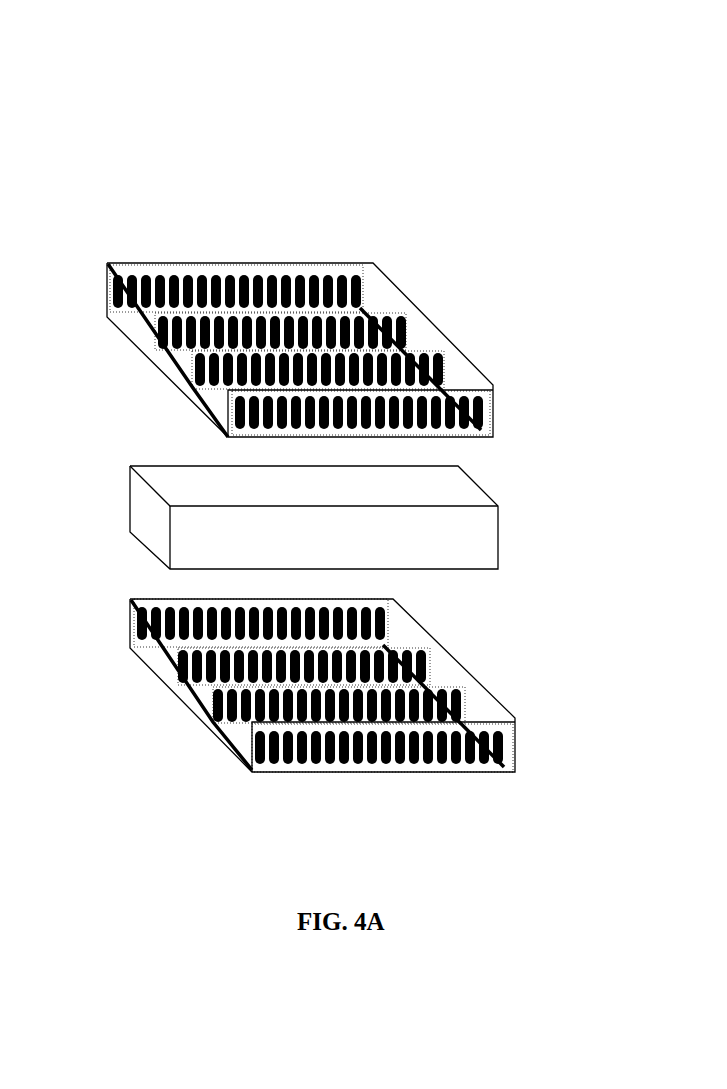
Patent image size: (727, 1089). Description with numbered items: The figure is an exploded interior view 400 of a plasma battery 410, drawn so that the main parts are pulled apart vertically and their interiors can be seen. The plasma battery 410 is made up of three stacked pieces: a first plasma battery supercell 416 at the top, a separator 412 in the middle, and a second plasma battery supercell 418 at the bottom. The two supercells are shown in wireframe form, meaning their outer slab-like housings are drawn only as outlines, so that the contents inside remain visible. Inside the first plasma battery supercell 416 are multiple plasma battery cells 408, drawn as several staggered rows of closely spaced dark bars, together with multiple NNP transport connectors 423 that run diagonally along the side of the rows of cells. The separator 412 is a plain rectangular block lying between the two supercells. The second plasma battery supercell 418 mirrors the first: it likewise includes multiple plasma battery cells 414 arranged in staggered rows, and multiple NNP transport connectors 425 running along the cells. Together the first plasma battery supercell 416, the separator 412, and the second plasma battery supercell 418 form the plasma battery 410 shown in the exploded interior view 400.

The exploded interior view 400 is at (318, 30).
The plasma battery 410 is at (254, 205).
The first plasma battery supercell 416 is at (350, 263).
The plasma battery cells 408 is at (417, 353).
The NNP transport connectors 423 is at (170, 362).
The separator 412 is at (362, 550).
The second plasma battery supercell 418 is at (515, 747).
The plasma battery cells 414 is at (458, 688).
The NNP transport connectors 425 is at (165, 663).